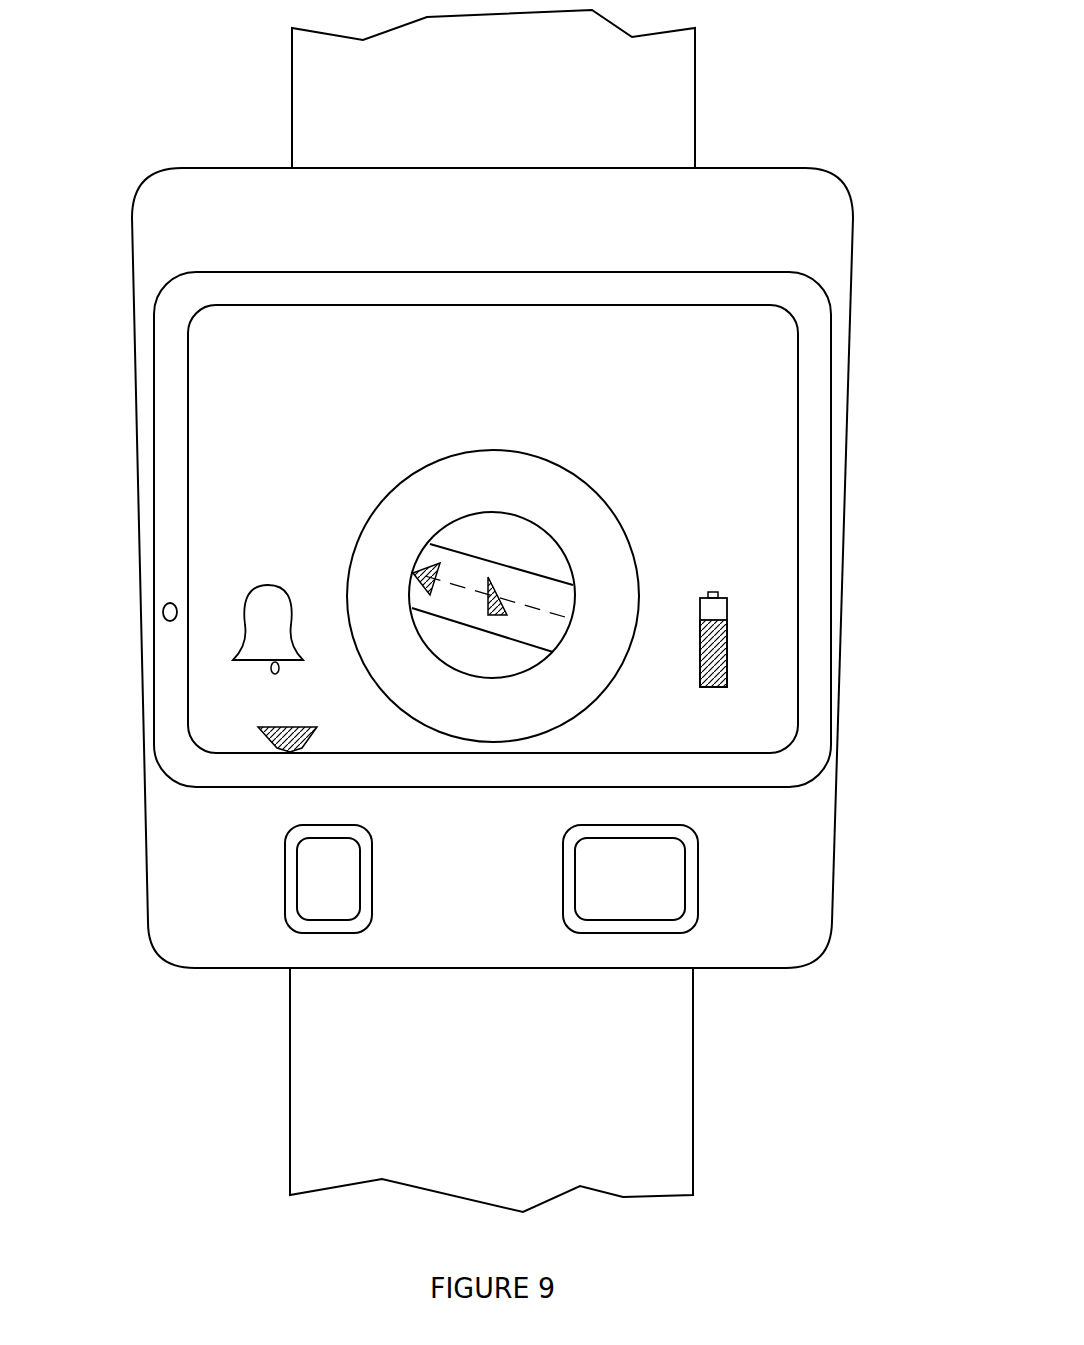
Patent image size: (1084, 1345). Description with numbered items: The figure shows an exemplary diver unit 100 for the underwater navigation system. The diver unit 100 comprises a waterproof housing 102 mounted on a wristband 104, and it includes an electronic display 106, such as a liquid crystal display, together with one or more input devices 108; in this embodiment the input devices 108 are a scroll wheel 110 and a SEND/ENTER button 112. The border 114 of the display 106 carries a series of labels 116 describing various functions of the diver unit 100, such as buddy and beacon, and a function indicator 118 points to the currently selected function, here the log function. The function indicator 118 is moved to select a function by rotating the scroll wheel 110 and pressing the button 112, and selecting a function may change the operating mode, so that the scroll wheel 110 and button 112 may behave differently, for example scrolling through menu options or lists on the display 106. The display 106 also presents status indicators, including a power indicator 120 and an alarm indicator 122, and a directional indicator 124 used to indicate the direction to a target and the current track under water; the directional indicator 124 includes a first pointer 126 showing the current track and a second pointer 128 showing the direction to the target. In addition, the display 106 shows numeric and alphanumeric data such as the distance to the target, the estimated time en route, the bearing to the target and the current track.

The diver unit 100 is at (812, 137).
The waterproof housing 102 is at (853, 278).
The wristband 104 is at (637, 88).
The electronic display 106 is at (767, 720).
The input devices 108 is at (200, 926).
The scroll wheel 110 is at (328, 902).
The SEND/ENTER button 112 is at (628, 902).
The border 114 is at (172, 350).
The labels 116 is at (820, 382).
The function indicator 118 is at (262, 727).
The power indicator 120 is at (727, 598).
The alarm indicator 122 is at (240, 627).
The directional indicator 124 is at (640, 580).
The first pointer 126 is at (490, 578).
The second pointer 128 is at (416, 571).